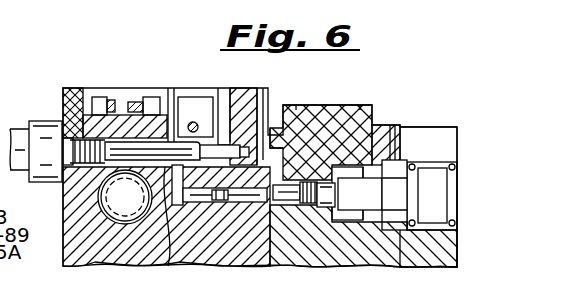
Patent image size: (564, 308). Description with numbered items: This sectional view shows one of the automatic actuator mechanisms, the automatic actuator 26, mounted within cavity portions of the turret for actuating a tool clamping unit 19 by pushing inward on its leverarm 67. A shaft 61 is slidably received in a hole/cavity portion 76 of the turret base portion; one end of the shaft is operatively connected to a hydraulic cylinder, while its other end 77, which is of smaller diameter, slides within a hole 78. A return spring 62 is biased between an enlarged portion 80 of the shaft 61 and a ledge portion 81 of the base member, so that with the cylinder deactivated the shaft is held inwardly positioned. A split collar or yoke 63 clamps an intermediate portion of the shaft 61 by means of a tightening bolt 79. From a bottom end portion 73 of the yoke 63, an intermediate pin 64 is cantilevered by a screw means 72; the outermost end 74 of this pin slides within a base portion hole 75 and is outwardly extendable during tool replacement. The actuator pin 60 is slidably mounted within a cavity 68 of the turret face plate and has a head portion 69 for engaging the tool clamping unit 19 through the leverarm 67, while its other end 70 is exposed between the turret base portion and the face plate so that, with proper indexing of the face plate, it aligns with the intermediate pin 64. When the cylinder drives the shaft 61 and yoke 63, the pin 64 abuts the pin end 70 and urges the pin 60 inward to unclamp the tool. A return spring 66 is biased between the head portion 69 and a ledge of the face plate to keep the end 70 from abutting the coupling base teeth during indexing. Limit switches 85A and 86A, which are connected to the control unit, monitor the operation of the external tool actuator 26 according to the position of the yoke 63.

The internal tool clamping unit 19 is at (440, 192).
The automatic actuator 26 is at (42, 117).
The pin 60 is at (335, 125).
The shaft 61 is at (124, 145).
The return spring 62 is at (123, 162).
The split collar or yoke 63 is at (195, 99).
The intermediate pin 64 is at (240, 203).
The return spring 66 is at (348, 128).
The leverarm 67 is at (398, 135).
The cavity 68 is at (315, 207).
The head portion 69 is at (345, 210).
The other end of pin 70 is at (288, 202).
The screw means 72 is at (152, 240).
The bottom end portion of yoke 73 is at (205, 203).
The outermost end of pin 74 is at (303, 130).
The base portion hole 75 is at (272, 140).
The hole/cavity portion 76 is at (76, 112).
The other end of shaft 77 is at (222, 146).
The hole 78 is at (259, 150).
The tightening bolt 79 is at (192, 123).
The enlarged portion of shaft 80 is at (65, 150).
The ledge portion 81 is at (100, 100).
The limit switch 85A is at (110, 100).
The limit switch 86A is at (153, 100).